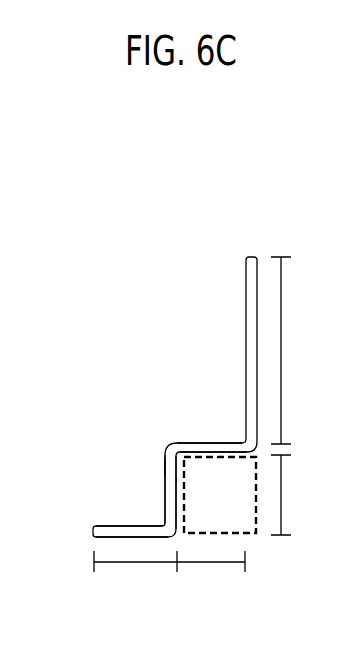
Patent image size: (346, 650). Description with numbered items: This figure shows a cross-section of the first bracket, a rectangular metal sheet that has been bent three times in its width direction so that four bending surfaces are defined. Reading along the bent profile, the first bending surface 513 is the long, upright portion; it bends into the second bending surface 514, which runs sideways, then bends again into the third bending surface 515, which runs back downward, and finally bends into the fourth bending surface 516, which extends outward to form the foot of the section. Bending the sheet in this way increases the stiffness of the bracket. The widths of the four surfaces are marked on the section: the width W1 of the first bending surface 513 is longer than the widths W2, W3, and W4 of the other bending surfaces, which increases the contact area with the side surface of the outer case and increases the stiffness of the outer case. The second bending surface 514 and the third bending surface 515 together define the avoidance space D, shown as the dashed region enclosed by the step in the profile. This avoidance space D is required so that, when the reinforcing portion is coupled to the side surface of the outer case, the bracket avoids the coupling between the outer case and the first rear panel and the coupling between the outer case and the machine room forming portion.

The first bending surface 513 is at (245, 281).
The second bending surface 514 is at (207, 443).
The third bending surface 515 is at (165, 493).
The fourth bending surface 516 is at (107, 526).
The avoidance space D is at (164, 468).
The width of the first bending surface W1 is at (293, 350).
The width of the second bending surface W2 is at (211, 570).
The width of the third bending surface W3 is at (293, 495).
The width of the fourth bending surface W4 is at (135, 570).